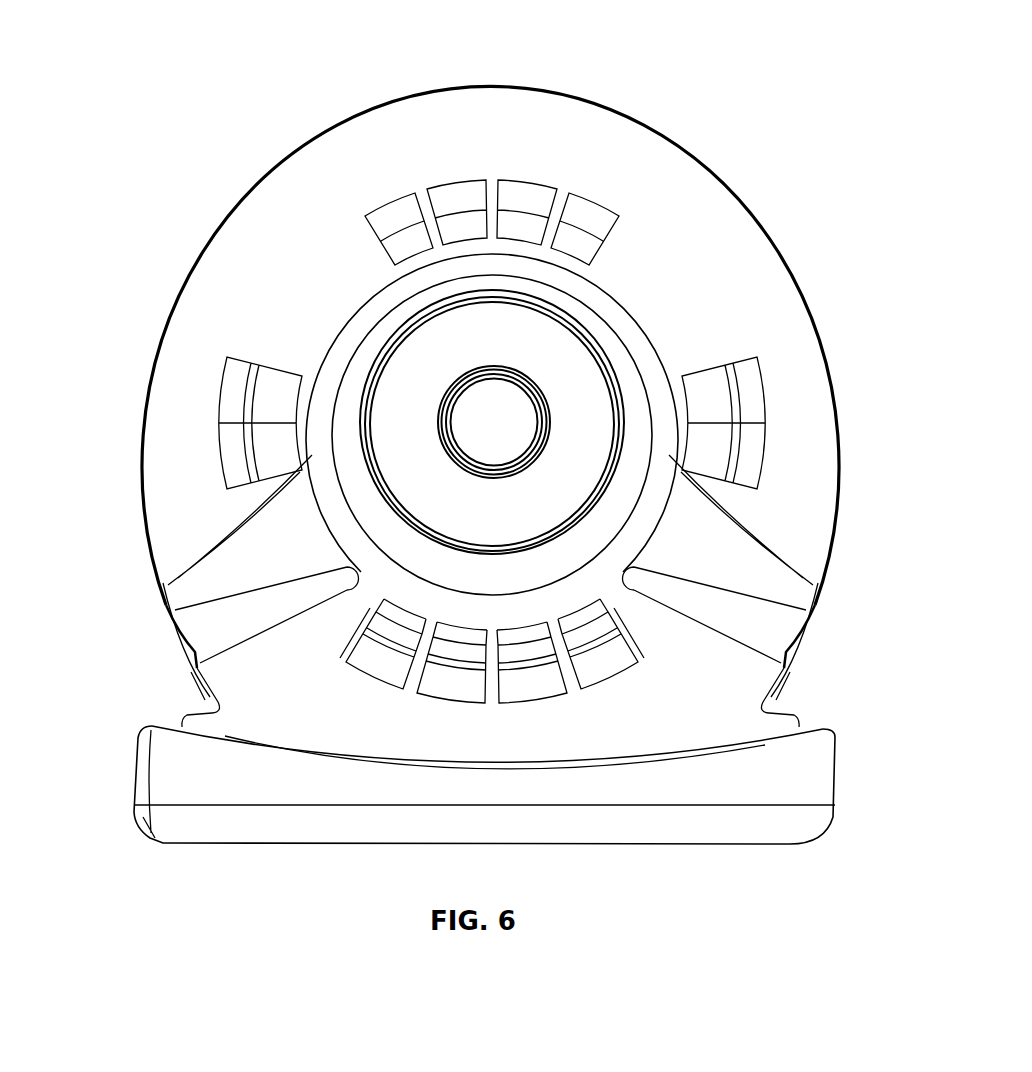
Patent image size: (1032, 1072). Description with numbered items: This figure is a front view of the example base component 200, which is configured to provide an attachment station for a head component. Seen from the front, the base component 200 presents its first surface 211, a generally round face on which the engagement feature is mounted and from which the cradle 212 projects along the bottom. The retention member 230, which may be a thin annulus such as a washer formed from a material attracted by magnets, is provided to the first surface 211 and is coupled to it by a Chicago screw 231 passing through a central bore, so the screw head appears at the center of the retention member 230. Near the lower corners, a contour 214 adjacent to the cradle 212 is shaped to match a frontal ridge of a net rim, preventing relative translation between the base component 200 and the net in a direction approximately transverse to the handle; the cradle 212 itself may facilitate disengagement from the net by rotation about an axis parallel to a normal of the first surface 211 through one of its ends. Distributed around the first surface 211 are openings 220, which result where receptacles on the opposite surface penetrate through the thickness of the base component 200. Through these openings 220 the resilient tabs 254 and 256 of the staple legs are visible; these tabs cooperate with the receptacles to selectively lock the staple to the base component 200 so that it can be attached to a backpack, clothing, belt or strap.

The base component 200 is at (474, 458).
The first surface 211 is at (657, 165).
The cradle 212 is at (750, 806).
The contour 214 is at (162, 650).
The openings 220 is at (463, 158).
The retention member 230 is at (592, 376).
The Chicago screw 231 is at (437, 412).
The resilient tab 254 is at (243, 458).
The resilient tab 256 is at (737, 458).